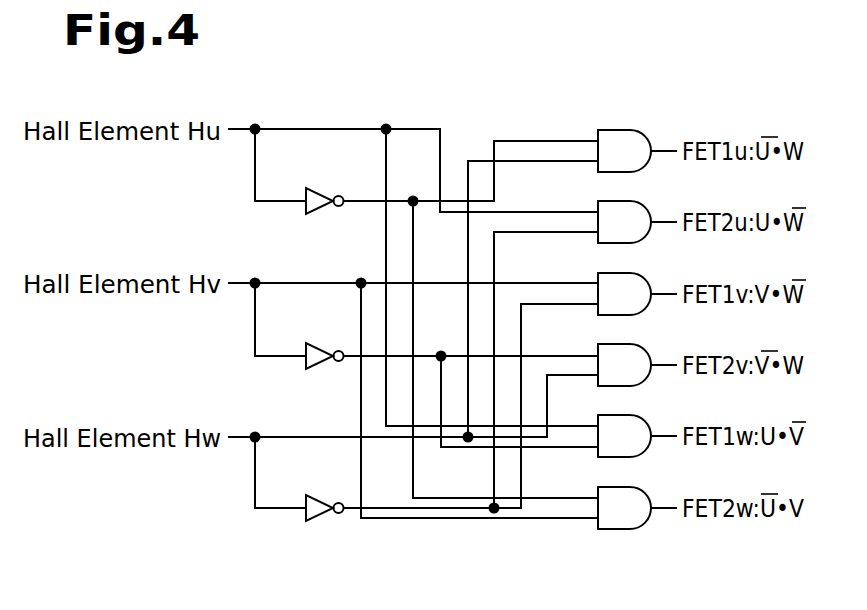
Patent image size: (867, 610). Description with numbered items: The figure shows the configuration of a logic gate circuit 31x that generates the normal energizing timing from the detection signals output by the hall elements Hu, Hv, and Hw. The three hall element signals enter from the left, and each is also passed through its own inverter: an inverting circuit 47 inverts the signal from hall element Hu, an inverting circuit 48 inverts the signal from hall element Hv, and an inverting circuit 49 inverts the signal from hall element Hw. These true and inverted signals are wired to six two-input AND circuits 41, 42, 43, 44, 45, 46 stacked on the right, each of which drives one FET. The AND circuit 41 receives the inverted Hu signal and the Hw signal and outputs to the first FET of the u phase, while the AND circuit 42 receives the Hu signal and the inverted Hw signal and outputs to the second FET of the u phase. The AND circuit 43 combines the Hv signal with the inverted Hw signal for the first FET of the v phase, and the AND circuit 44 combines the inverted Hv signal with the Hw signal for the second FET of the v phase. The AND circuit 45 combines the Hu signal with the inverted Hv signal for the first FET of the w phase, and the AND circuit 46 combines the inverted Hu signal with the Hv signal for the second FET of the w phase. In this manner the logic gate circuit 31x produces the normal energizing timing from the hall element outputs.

The logic gate circuit 31x is at (660, 92).
The AND circuit 41 is at (611, 130).
The AND circuit 42 is at (611, 201).
The AND circuit 43 is at (611, 273).
The AND circuit 44 is at (611, 344).
The AND circuit 45 is at (611, 415).
The AND circuit 46 is at (611, 487).
The inverting circuit 47 is at (319, 185).
The inverting circuit 48 is at (319, 341).
The inverting circuit 49 is at (319, 495).